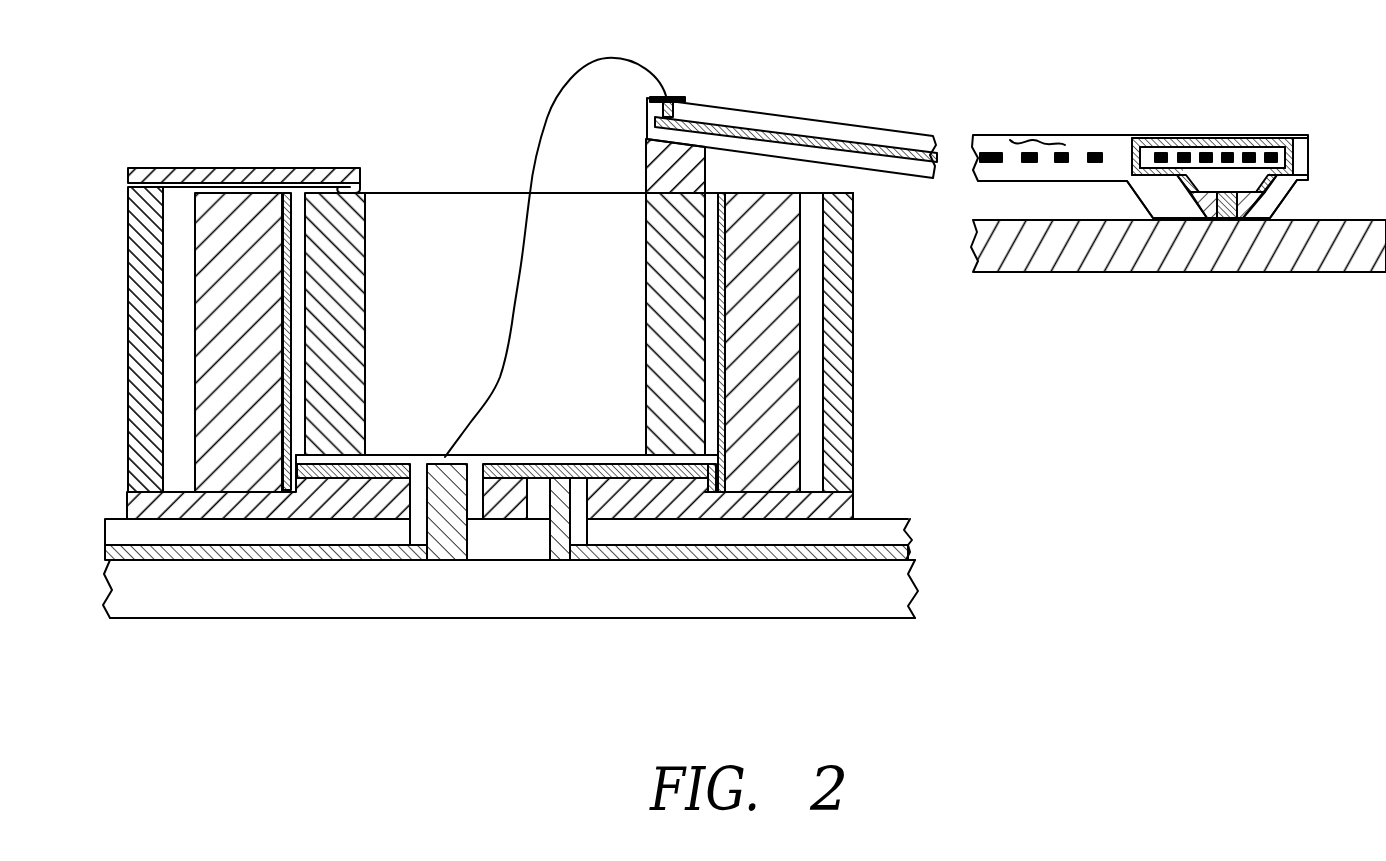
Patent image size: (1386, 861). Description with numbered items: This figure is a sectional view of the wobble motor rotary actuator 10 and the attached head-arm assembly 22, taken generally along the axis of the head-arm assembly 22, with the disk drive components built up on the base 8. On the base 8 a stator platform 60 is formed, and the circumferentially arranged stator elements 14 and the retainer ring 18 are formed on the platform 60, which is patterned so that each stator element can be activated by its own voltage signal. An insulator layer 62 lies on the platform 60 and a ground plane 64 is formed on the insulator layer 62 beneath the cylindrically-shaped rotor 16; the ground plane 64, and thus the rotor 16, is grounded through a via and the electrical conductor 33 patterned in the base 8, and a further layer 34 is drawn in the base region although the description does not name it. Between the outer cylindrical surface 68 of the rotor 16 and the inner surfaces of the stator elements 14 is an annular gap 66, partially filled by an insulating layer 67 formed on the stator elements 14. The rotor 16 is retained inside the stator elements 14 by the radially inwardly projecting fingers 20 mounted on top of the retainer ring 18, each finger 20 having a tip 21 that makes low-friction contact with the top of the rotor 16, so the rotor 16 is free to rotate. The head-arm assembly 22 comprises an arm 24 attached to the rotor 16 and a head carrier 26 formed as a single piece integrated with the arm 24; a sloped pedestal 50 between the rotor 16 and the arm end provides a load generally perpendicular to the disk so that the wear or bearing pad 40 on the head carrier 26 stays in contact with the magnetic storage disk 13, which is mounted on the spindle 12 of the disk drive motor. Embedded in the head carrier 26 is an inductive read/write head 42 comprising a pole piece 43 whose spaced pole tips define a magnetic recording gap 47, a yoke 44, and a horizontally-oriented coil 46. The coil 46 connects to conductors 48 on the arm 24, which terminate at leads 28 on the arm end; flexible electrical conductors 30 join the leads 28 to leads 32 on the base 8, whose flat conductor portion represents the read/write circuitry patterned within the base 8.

The base 8 is at (900, 598).
The wobble motor rotary actuator 10 is at (133, 122).
The spindle 12 is at (834, 385).
The magnetic storage disk 13 is at (1320, 258).
The stator elements 14 is at (214, 202).
The rotor 16 is at (346, 217).
The retainer ring 18 is at (131, 276).
The fingers 20 is at (176, 168).
The tip 21 is at (354, 182).
The head-arm assembly 22 is at (861, 88).
The arm 24 is at (792, 122).
The head carrier 26 is at (1300, 140).
The leads 28 is at (672, 101).
The flexible electrical conductors 30 is at (546, 120).
The leads 32 is at (125, 502).
The electrical conductor 33 is at (688, 555).
The insulating layer 34 is at (107, 532).
The bearing pad 40 is at (1283, 200).
The inductive read/write head 42 is at (1222, 162).
The pole piece 43 is at (1205, 219).
The yoke 44 is at (1160, 140).
The coil 46 is at (1062, 150).
The magnetic recording gap 47 is at (1228, 220).
The conductors 48 is at (742, 124).
The sloped pedestal 50 is at (651, 165).
The stator platform 60 is at (844, 508).
The insulator layer 62 is at (612, 505).
The ground plane 64 is at (707, 472).
The annular gap 66 is at (298, 207).
The insulating layer 67 is at (284, 243).
The outer cylindrical surface 68 is at (703, 293).